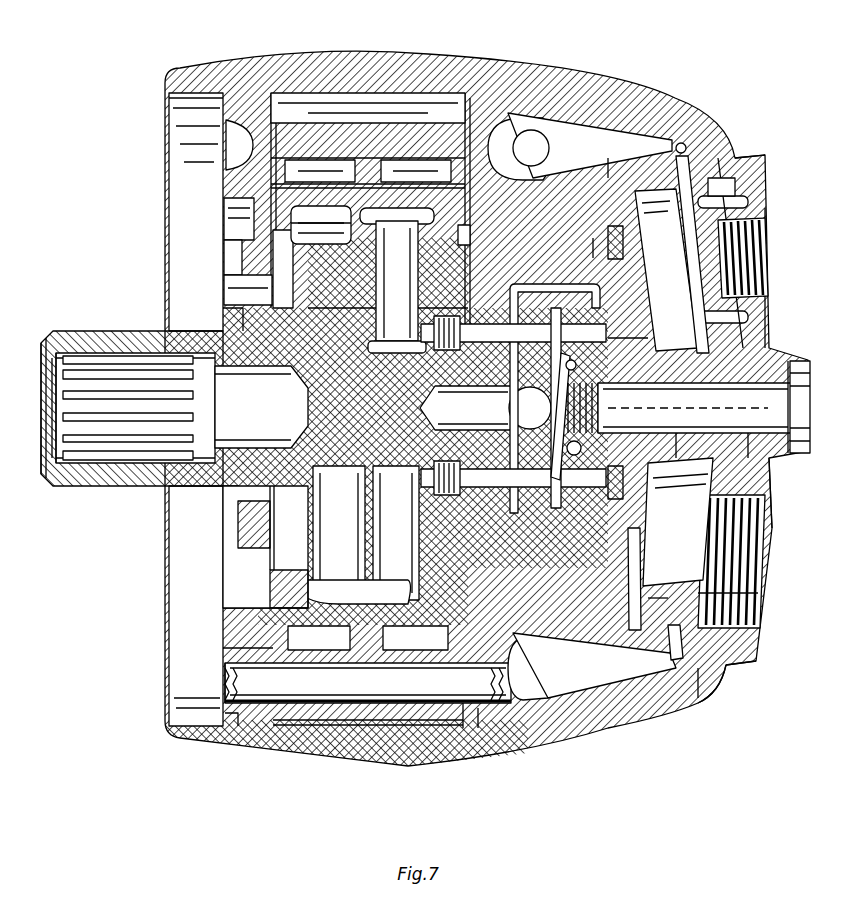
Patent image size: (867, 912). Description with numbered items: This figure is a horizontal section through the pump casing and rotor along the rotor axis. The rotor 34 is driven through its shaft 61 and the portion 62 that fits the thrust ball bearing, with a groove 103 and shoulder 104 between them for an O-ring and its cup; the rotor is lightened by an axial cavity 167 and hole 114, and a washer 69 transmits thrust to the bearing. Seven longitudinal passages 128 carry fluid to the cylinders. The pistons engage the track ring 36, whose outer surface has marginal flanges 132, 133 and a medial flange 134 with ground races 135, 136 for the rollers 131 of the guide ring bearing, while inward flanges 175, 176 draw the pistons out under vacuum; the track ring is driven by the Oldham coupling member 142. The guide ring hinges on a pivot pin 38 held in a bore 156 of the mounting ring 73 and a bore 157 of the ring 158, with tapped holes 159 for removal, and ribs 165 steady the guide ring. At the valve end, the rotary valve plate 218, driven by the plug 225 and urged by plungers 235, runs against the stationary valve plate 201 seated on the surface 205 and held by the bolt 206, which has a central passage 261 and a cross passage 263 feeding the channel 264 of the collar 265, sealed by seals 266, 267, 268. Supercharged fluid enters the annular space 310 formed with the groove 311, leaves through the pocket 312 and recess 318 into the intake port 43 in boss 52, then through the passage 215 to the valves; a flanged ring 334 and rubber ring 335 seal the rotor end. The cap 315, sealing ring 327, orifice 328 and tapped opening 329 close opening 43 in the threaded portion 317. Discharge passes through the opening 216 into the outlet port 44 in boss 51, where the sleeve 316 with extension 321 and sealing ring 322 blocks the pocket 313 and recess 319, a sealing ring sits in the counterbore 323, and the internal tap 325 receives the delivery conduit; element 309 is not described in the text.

The boss 52 is at (705, 110).
The radially extending ribs 165 is at (213, 57).
The inwardly directed marginal flange 175 is at (255, 213).
The groove 103 is at (118, 323).
The shoulder 104 is at (83, 322).
The hole 114 is at (120, 430).
The shaft 61 is at (62, 322).
The shaft portion 62 is at (180, 322).
The cavity 167 is at (261, 407).
The rotor 34 is at (415, 359).
The marginal flange 132 is at (300, 95).
The rollers 131 is at (302, 150).
The marginal flange 133 is at (445, 150).
The bearing race 135 is at (340, 120).
The medial flange 134 is at (355, 220).
The bearing race 136 is at (400, 200).
The passages 128 is at (324, 262).
The inwardly directed marginal flange 176 is at (455, 250).
The piston 309 is at (395, 735).
The bore 157 is at (510, 700).
The ring 158 is at (510, 95).
The tapped holes 159 is at (165, 700).
The bore 156 is at (215, 685).
The pivot pin 38 is at (460, 735).
The end cap mounting ring 73 is at (215, 650).
The track ring 36 is at (215, 630).
The intermediate coupling member 142 is at (225, 555).
The washer 69 is at (210, 520).
The plug 225 is at (485, 408).
The plungers 235 is at (498, 292).
The rotary valve plate 218 is at (490, 510).
The stationary valve plate 201 is at (560, 520).
The seal 266 is at (613, 419).
The cross drilled passage 263 is at (695, 408).
The machine bolt 206 is at (797, 352).
The oil passage 261 is at (676, 404).
The seal 267 is at (733, 448).
The seal 268 is at (790, 445).
The internal circumferential channel 264 is at (765, 460).
The inner surface 205 is at (711, 283).
The collar 265 is at (770, 350).
The intake port 43 is at (666, 270).
The kidney shaped passage 215 is at (640, 330).
The threaded portions 317 is at (690, 180).
The offset recess 318 is at (668, 136).
The milled groove 311 is at (545, 135).
The milled pocket 312 is at (560, 175).
The annular space 310 is at (528, 110).
The flanged ring 334 is at (598, 165).
The ring 335 is at (585, 240).
The milled pocket 313 is at (600, 728).
The recess 319 is at (665, 650).
The cap 315 is at (745, 145).
The orifice 328 is at (732, 220).
The tapped opening 329 is at (735, 240).
The sealing ring 327 is at (760, 280).
The internal tap 325 is at (735, 560).
The sealing ring 322 is at (740, 590).
The sleeve 316 is at (750, 640).
The boss 51 is at (710, 685).
The counterbore 323 is at (700, 695).
The outlet port 44 is at (678, 522).
The opening 216 is at (643, 495).
The extension 321 is at (648, 588).